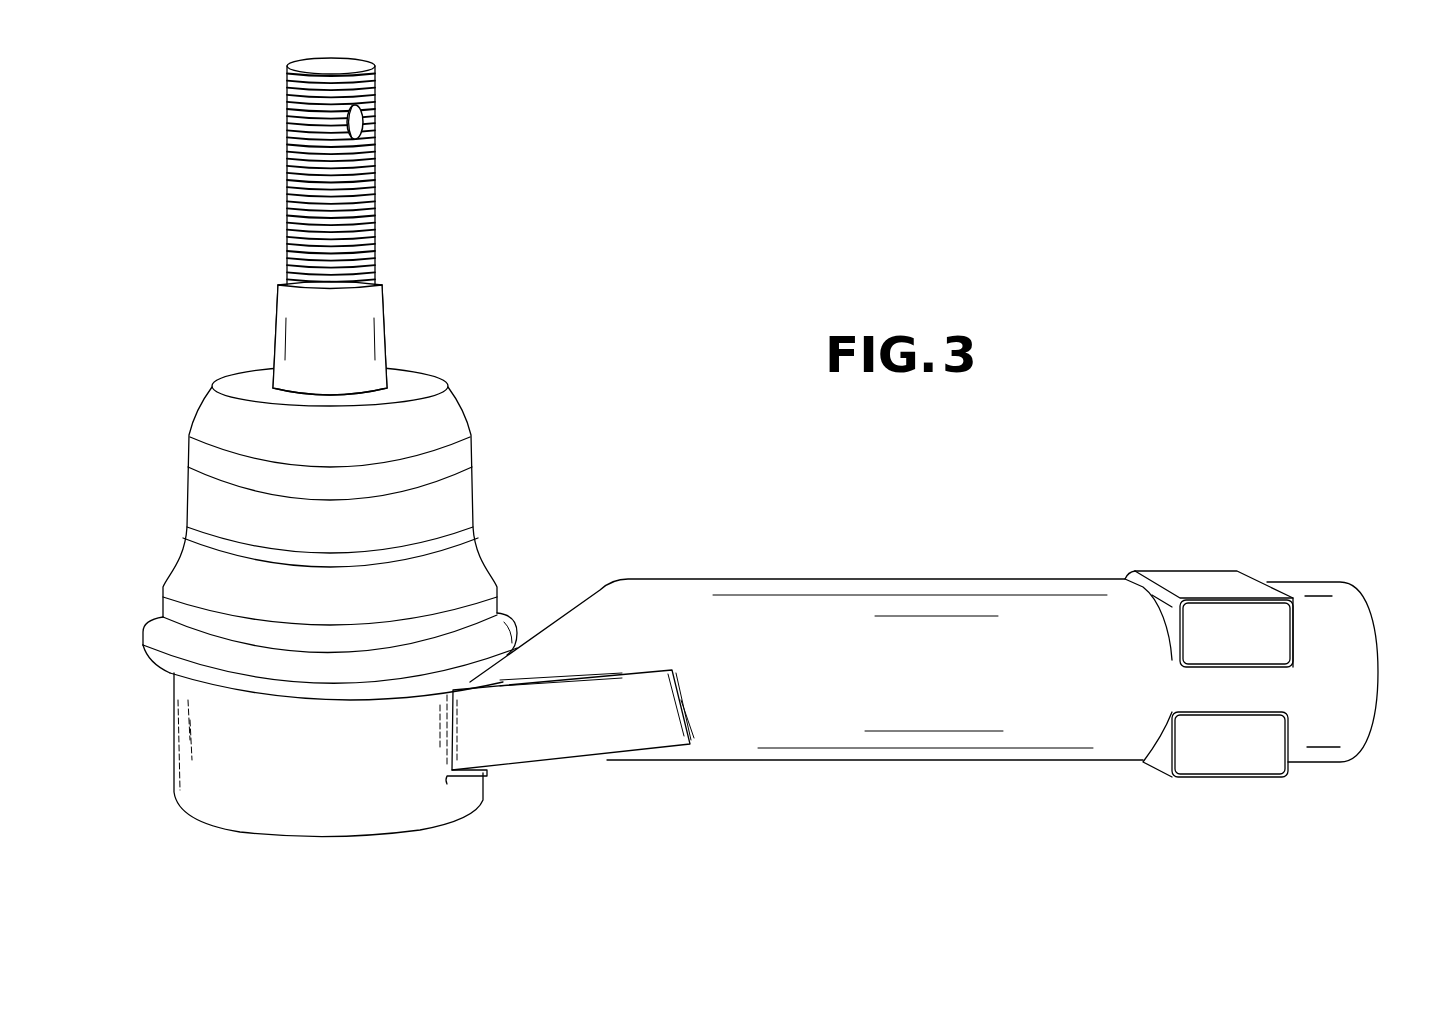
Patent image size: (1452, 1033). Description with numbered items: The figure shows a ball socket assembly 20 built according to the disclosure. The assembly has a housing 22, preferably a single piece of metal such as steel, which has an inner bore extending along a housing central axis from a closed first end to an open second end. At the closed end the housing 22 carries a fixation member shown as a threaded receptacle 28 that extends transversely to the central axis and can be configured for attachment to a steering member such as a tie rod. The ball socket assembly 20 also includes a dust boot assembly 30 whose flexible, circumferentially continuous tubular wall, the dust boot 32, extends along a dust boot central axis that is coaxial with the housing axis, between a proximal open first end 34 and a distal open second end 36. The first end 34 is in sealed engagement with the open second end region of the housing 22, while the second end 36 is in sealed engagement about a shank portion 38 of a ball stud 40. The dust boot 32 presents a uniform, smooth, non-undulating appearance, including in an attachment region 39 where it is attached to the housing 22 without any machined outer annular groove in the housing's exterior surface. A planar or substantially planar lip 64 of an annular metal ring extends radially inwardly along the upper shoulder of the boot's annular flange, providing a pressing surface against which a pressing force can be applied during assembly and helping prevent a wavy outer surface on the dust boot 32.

The ball socket assembly 20 is at (656, 165).
The housing 22 is at (205, 745).
The threaded receptacle 28 is at (1388, 592).
The dust boot assembly 30 is at (498, 440).
The dust boot 32 is at (457, 497).
The first end 34 is at (150, 668).
The second end 36 is at (425, 383).
The shank portion 38 is at (372, 311).
The attachment region 39 is at (509, 612).
The ball stud 40 is at (433, 107).
The lip 64 is at (157, 633).